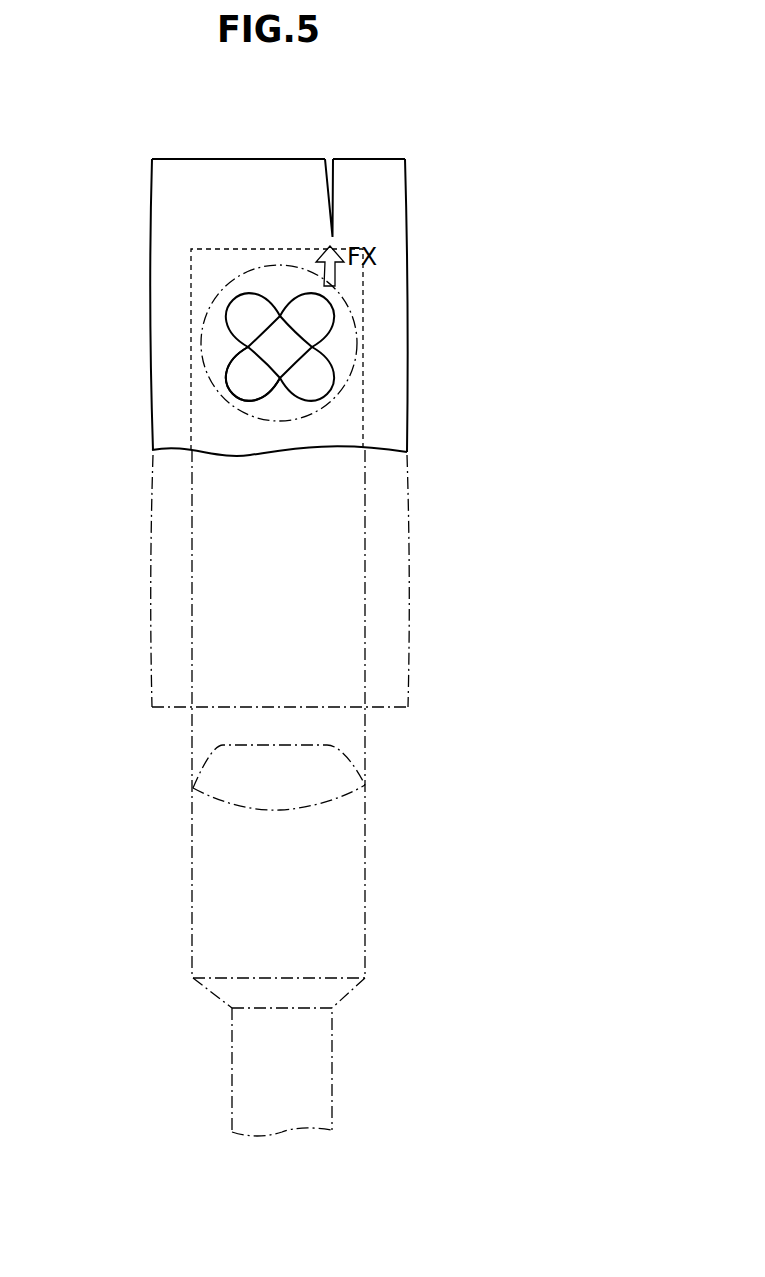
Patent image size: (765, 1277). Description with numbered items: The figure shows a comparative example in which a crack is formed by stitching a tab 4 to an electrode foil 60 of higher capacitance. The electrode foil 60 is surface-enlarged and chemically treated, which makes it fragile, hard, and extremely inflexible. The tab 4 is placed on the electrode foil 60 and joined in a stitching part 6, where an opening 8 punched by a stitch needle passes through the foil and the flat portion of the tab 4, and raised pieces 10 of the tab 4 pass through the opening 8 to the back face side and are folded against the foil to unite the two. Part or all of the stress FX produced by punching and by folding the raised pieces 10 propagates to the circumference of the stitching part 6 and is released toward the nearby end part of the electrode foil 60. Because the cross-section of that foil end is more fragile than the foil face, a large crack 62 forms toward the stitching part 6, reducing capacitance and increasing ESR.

The tab 4 is at (362, 280).
The stitching part 6 is at (353, 385).
The opening 8 is at (265, 347).
The raised pieces 10 is at (175, 368).
The electrode foil 60 is at (387, 187).
The crack 62 is at (333, 187).